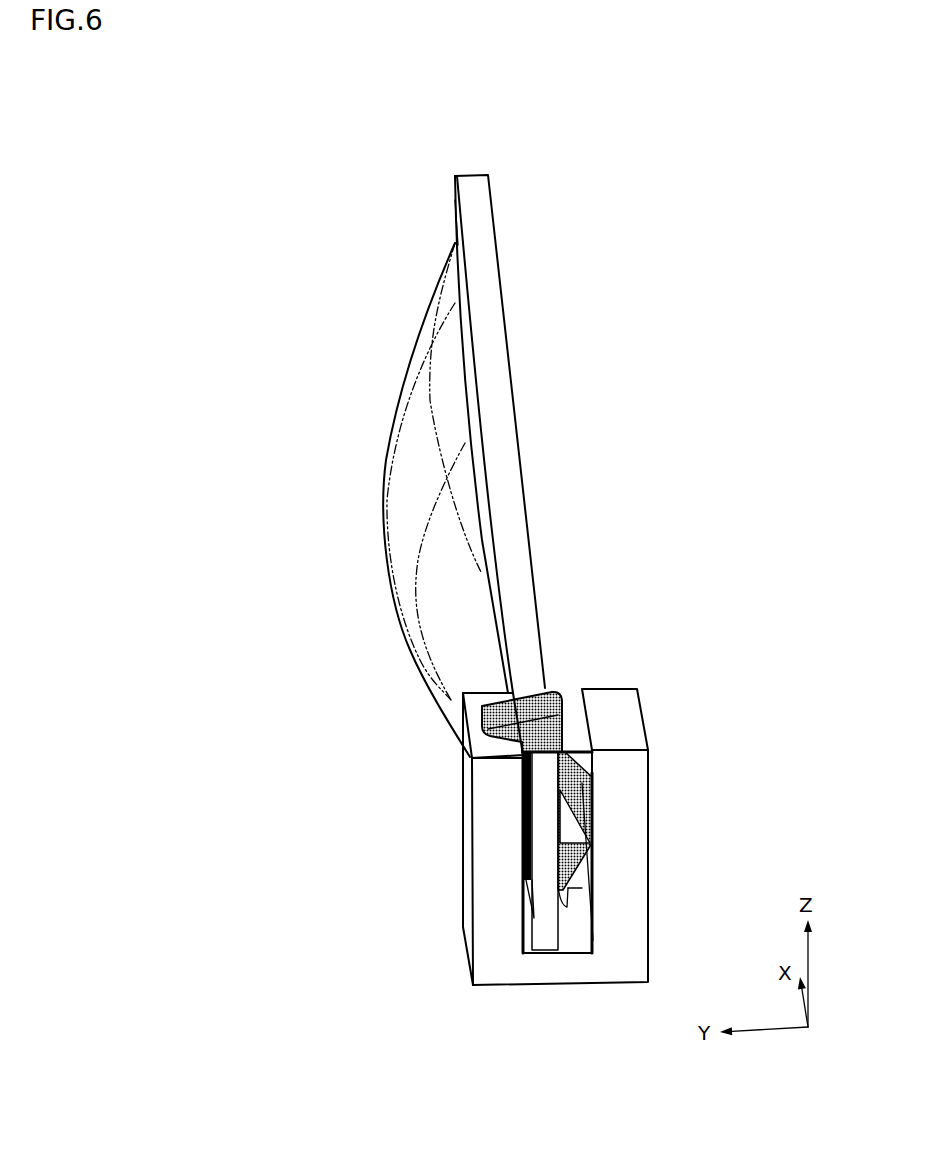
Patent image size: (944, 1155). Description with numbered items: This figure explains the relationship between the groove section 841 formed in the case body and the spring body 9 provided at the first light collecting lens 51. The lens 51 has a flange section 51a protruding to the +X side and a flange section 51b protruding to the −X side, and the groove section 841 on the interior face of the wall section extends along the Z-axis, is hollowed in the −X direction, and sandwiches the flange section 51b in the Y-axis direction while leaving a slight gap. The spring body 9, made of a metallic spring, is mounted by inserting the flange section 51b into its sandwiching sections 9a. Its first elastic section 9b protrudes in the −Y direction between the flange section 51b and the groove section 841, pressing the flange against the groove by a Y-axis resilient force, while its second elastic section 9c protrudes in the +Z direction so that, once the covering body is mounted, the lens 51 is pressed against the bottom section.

The first light collecting lens 51 is at (548, 370).
The flange section 51a is at (456, 228).
The flange section 51b is at (538, 935).
The groove section 841 is at (578, 693).
The spring body 9 is at (556, 848).
The sandwiching sections 9a is at (543, 782).
The first elastic section 9b is at (583, 783).
The second elastic section 9c is at (490, 716).